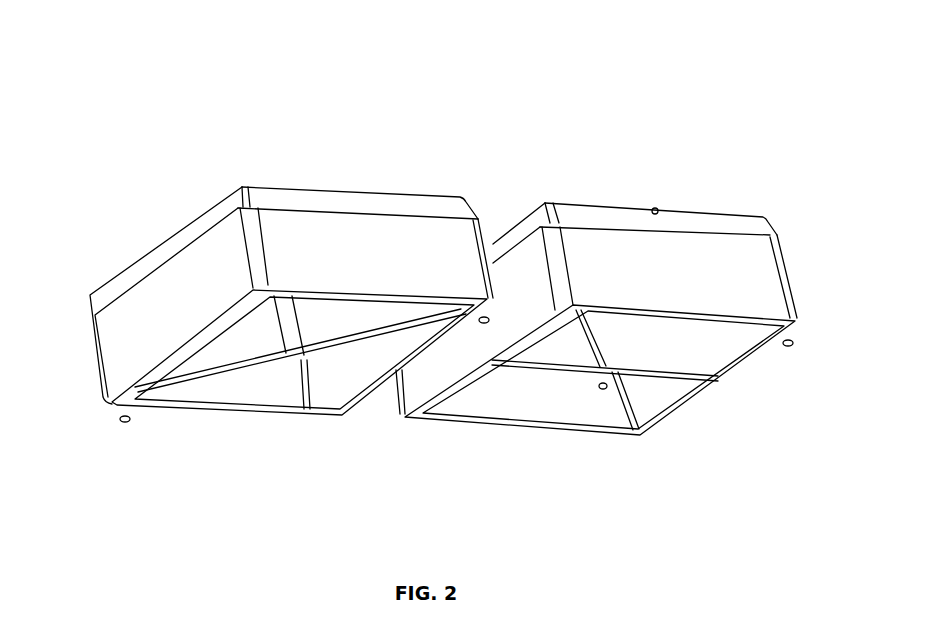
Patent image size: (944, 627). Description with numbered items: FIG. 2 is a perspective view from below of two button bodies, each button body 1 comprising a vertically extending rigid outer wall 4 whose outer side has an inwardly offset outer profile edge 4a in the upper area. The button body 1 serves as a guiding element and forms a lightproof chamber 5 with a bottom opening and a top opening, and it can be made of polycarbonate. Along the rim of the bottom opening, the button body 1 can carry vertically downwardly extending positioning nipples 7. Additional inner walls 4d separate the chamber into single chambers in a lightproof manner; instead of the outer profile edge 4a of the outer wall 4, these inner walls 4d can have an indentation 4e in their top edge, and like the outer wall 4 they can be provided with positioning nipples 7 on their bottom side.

The button body 1 is at (443, 313).
The outer wall 4 is at (459, 233).
The outer profile edge 4a is at (397, 194).
The inner walls 4d is at (350, 358).
The indentation 4e is at (232, 172).
The lightproof chamber 5 is at (453, 362).
The positioning nipples 7 is at (469, 326).